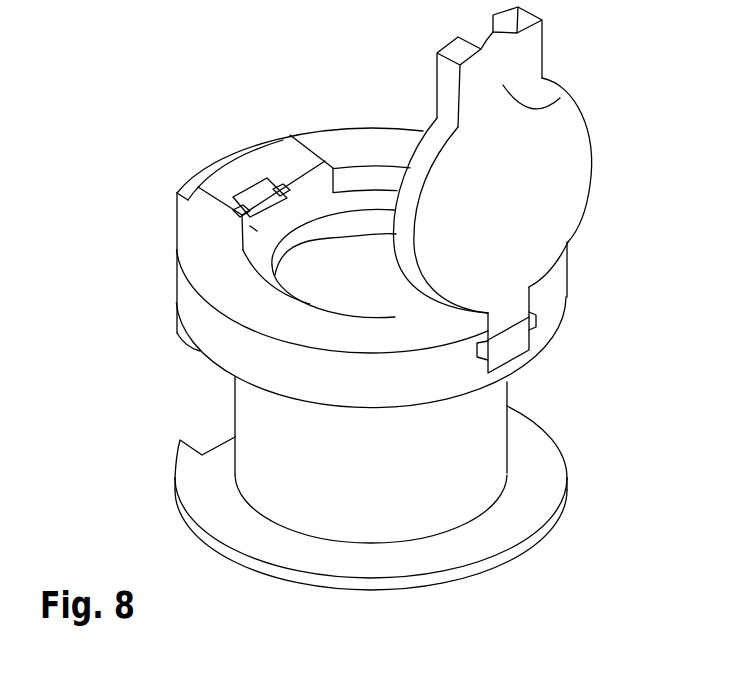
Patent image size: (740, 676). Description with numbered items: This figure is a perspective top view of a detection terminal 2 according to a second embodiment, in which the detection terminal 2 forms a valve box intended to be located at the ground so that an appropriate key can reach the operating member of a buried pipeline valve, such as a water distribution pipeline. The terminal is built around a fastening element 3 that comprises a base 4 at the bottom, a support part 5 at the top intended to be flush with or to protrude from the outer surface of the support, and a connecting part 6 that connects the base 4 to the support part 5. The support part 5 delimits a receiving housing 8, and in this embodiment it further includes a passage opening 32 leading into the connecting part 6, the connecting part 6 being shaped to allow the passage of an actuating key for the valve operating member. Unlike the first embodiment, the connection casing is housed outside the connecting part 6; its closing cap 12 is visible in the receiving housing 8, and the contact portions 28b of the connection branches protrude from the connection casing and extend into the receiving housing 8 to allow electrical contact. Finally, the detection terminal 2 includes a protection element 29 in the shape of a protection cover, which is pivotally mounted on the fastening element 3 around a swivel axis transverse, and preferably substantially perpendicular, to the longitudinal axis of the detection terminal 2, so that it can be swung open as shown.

The detection terminal 2 is at (650, 180).
The fastening element 3 is at (240, 510).
The base 4 is at (547, 458).
The support part 5 is at (217, 337).
The connecting part 6 is at (483, 422).
The receiving housing 8 is at (250, 258).
The closing cap 12 is at (253, 196).
The contact portion 28b is at (282, 188).
The protection element 29 is at (560, 100).
The passage opening 32 is at (357, 252).